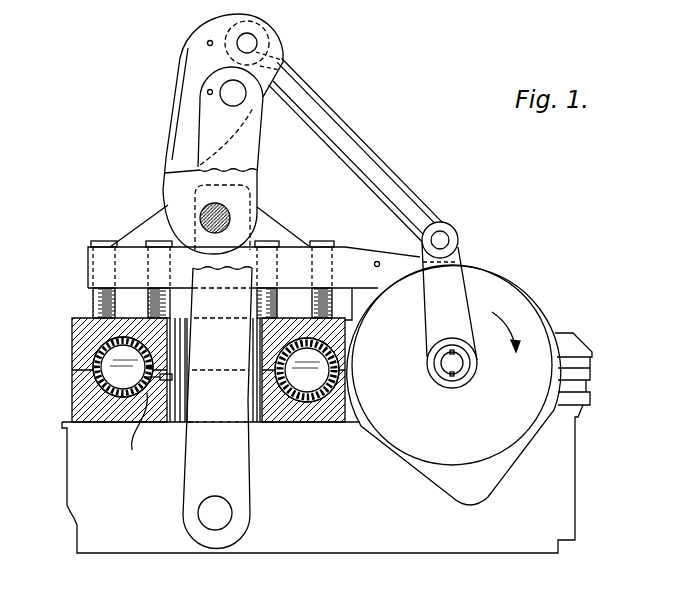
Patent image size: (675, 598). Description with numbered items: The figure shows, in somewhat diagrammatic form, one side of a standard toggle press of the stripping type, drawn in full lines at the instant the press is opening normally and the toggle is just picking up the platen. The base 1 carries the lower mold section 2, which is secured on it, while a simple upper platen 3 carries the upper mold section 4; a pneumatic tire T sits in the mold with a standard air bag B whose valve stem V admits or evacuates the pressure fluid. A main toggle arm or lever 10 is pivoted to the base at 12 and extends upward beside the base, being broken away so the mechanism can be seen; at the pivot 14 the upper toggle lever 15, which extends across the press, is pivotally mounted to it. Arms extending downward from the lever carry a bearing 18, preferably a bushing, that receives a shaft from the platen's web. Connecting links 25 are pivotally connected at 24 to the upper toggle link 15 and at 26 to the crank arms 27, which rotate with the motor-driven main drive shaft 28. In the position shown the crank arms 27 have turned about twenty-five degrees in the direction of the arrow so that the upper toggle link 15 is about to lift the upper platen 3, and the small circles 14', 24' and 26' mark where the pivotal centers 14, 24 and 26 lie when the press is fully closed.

The base 1 is at (442, 552).
The lower mold section 2 is at (80, 405).
The upper platen 3 is at (90, 252).
The upper mold section 4 is at (73, 355).
The main toggle arm 10 is at (240, 467).
The pivot 12 is at (228, 515).
The pivot 14 is at (187, 117).
The pivotal center location when press is fully closed 14' is at (176, 93).
The upper toggle lever 15 is at (182, 135).
The bearing 18 is at (228, 212).
The pivotal connection 24 is at (270, 45).
The pivotal center location when press is fully closed 24' is at (170, 43).
The connecting link 25 is at (404, 177).
The pivotal connection 26 is at (456, 238).
The pivotal center location when press is fully closed 26' is at (389, 248).
The crank arm 27 is at (462, 308).
The main drive shaft 28 is at (463, 355).
The air bag B is at (172, 377).
The pneumatic tire T is at (97, 377).
The valve stem V is at (140, 429).